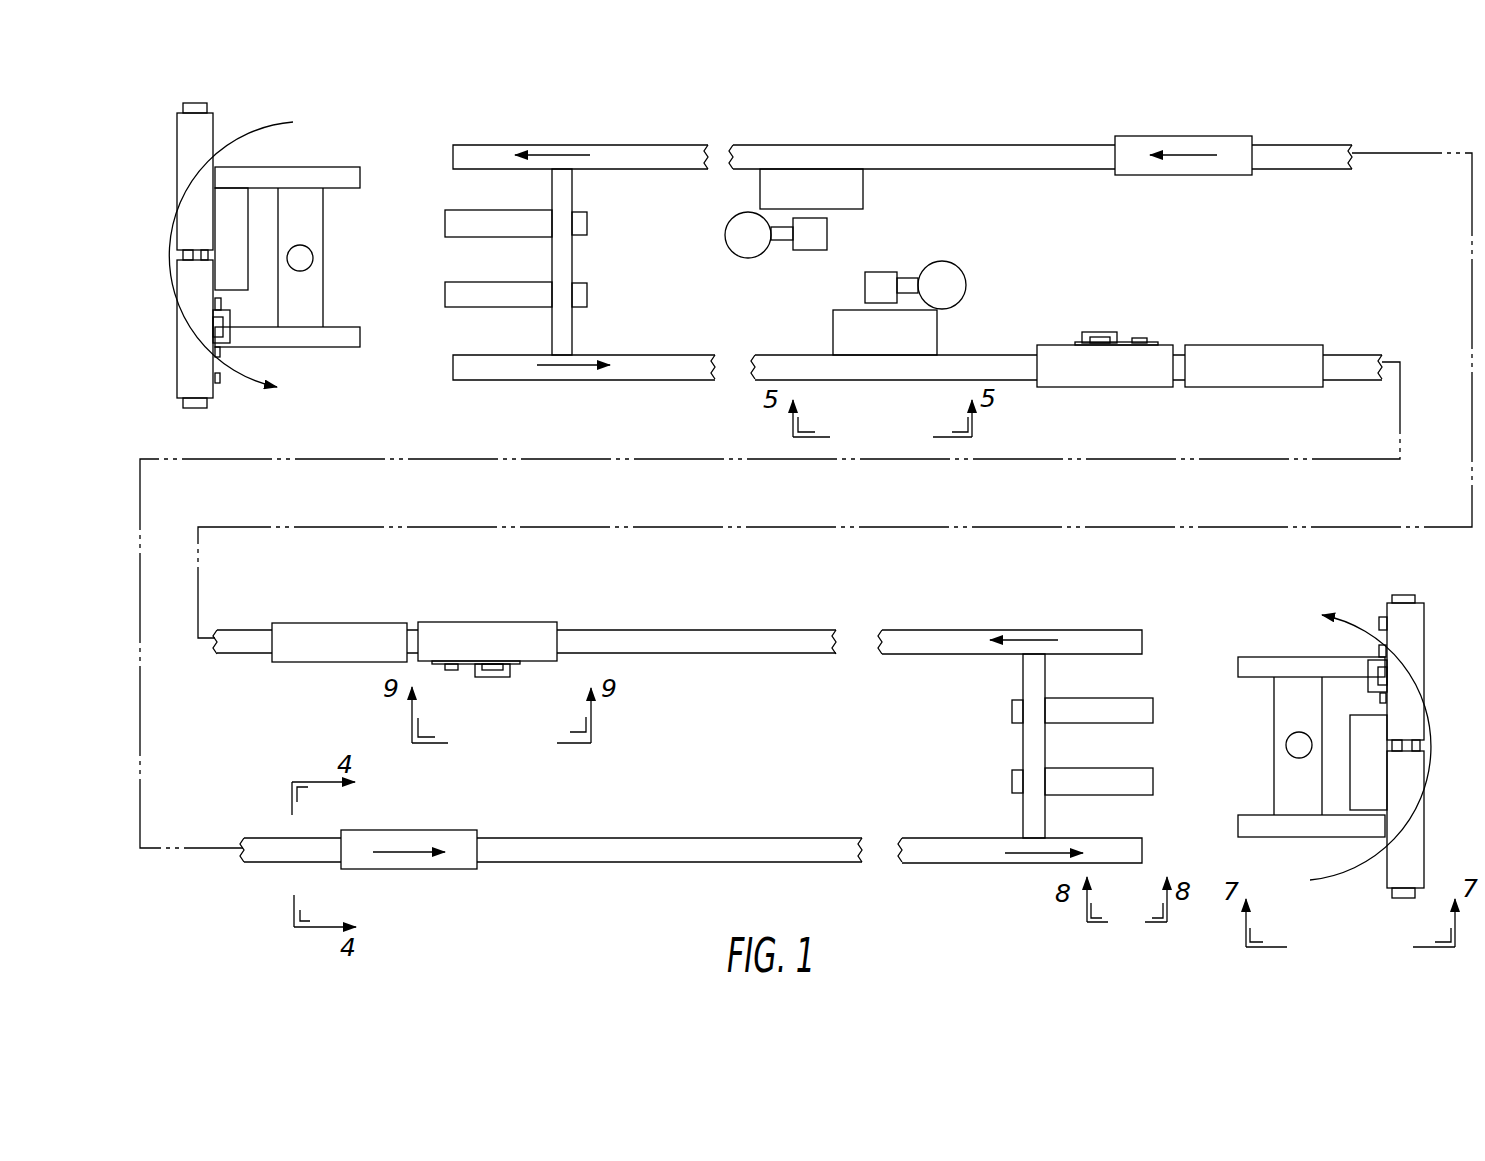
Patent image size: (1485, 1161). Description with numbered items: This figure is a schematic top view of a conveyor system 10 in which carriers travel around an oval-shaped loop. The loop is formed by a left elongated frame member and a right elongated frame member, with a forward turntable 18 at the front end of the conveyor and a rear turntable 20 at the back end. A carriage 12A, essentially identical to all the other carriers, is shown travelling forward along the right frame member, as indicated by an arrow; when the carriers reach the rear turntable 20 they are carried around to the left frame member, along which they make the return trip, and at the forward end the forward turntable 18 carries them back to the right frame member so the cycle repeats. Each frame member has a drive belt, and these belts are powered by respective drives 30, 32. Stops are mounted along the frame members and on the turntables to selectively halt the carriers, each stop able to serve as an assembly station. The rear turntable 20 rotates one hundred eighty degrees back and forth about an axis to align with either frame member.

The conveyor system 10 is at (934, 128).
The carriage 12A is at (462, 866).
The forward turntable 18 is at (315, 357).
The rear turntable 20 is at (1306, 842).
The drive 30 is at (800, 260).
The drive 32 is at (914, 266).